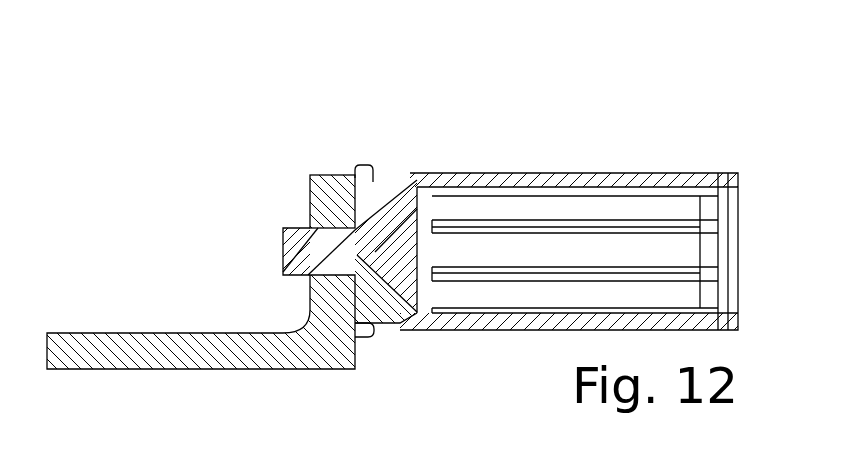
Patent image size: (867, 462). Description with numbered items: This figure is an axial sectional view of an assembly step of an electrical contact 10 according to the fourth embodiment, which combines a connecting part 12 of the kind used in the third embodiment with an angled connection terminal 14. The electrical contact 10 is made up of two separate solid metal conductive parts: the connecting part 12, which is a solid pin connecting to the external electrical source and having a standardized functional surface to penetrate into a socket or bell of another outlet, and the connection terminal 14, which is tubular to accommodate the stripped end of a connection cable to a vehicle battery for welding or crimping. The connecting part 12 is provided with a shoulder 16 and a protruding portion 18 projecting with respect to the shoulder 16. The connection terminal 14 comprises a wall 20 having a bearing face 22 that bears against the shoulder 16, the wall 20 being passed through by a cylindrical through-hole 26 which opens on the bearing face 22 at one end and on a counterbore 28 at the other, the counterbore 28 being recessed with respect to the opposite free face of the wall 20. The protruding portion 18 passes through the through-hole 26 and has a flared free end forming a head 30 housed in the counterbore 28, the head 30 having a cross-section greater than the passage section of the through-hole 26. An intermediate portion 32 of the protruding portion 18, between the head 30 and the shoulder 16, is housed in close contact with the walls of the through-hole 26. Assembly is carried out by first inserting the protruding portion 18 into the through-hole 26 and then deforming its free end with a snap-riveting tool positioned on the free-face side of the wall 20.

The electrical contact 10 is at (508, 128).
The connecting part 12 is at (621, 175).
The connection terminal 14 is at (140, 358).
The shoulder 16 is at (331, 180).
The protruding portion 18 is at (90, 175).
The wall 20 is at (331, 320).
The bearing face 22 is at (381, 183).
The through-hole 26 is at (350, 262).
The counterbore 28 is at (314, 226).
The head 30 is at (296, 241).
The intermediate portion 32 is at (318, 258).